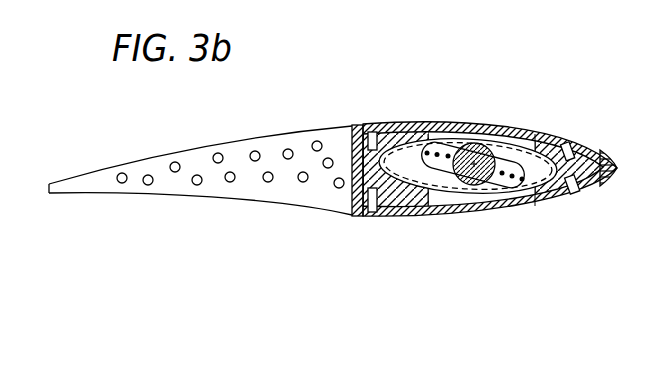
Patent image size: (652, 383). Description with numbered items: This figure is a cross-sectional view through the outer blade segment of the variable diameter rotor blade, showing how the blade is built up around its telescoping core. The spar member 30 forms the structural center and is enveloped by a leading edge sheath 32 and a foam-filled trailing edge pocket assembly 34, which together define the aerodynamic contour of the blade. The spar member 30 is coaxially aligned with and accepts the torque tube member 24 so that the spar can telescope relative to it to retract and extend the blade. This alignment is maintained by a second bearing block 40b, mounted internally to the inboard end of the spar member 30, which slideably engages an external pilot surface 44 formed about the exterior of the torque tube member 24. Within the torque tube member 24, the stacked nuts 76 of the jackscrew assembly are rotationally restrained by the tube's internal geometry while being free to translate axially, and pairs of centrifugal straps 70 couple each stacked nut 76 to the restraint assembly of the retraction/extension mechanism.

The foam-filled trailing edge pocket assembly 34 is at (212, 141).
The spar member 30 is at (540, 134).
The leading edge sheath 32 is at (615, 168).
The second bearing block 40b is at (395, 138).
The external pilot surface 44 is at (402, 218).
The torque tube member 24 is at (490, 139).
The centrifugal straps 70 is at (448, 159).
The stacked nuts 76 is at (492, 187).